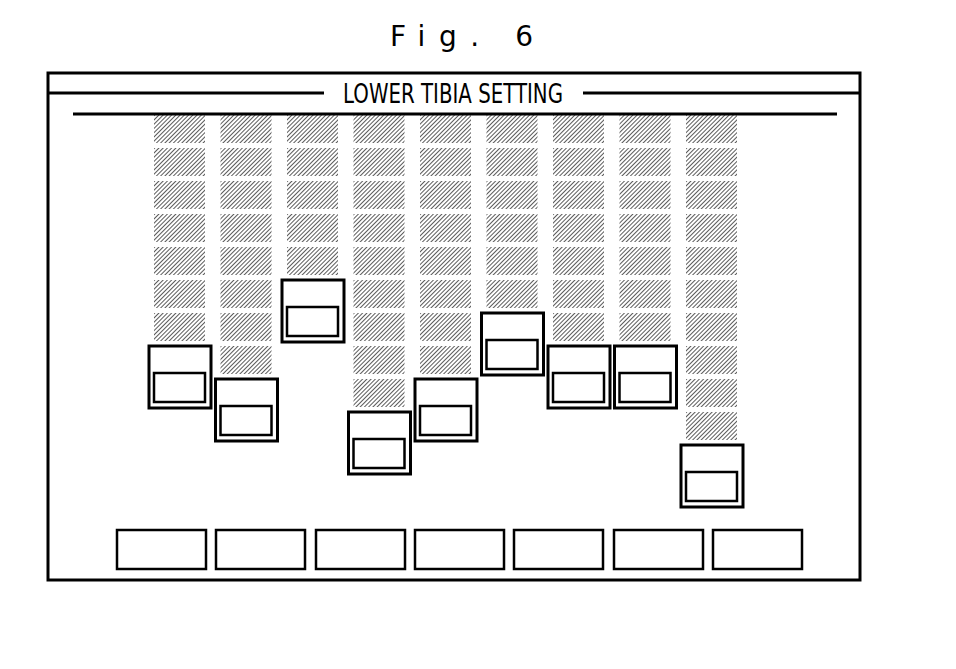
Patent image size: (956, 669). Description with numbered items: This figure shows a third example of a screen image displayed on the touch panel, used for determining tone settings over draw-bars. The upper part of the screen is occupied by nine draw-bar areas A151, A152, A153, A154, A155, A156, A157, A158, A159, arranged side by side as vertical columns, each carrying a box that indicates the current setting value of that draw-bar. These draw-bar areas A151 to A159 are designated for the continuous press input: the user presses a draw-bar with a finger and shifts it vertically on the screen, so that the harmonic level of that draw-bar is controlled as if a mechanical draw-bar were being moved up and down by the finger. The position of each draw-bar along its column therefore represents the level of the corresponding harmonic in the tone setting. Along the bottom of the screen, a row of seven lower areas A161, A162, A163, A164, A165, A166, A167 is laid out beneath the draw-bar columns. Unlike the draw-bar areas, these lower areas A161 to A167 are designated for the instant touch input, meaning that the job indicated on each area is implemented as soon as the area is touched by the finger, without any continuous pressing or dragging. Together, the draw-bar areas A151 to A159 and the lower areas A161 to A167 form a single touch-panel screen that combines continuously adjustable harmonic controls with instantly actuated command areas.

The draw-bar area A151 is at (176, 409).
The draw-bar area A152 is at (247, 442).
The draw-bar area A153 is at (312, 343).
The draw-bar area A154 is at (381, 475).
The draw-bar area A155 is at (443, 442).
The draw-bar area A156 is at (511, 376).
The draw-bar area A157 is at (572, 409).
The draw-bar area A158 is at (637, 409).
The draw-bar area A159 is at (670, 486).
The lower area A161 is at (163, 570).
The lower area A162 is at (262, 570).
The lower area A163 is at (361, 570).
The lower area A164 is at (461, 570).
The lower area A165 is at (560, 570).
The lower area A166 is at (663, 570).
The lower area A167 is at (757, 570).